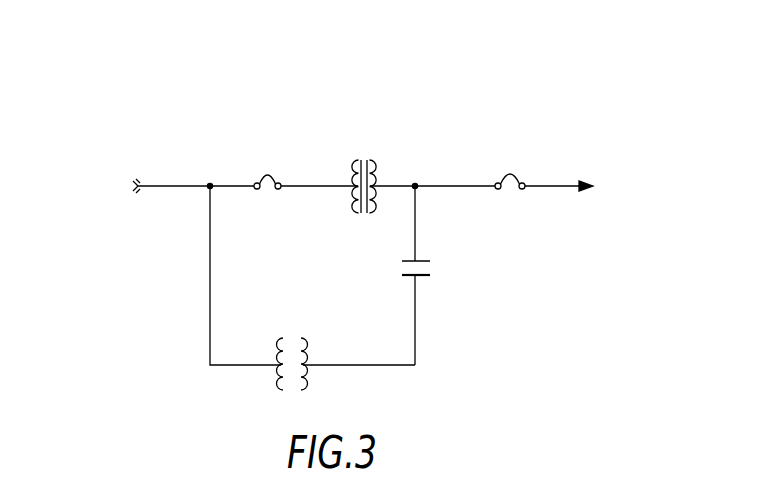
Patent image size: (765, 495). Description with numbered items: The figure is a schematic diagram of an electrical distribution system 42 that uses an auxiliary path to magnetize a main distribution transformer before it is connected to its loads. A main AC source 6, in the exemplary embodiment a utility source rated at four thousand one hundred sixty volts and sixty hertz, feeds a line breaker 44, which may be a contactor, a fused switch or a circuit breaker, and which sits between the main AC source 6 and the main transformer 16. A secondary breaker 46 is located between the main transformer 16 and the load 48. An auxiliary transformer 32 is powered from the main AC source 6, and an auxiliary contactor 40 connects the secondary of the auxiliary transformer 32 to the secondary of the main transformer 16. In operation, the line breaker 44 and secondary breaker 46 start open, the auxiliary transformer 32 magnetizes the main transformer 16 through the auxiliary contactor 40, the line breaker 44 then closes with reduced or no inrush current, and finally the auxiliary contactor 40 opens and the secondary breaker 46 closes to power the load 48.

The main AC source 6 is at (140, 185).
The line breaker 44 is at (268, 175).
The main transformer 16 is at (359, 160).
The secondary breaker 46 is at (510, 174).
The load 48 is at (616, 193).
The electrical distribution system 42 is at (497, 102).
The auxiliary contactor 40 is at (420, 278).
The auxiliary transformer 32 is at (290, 340).